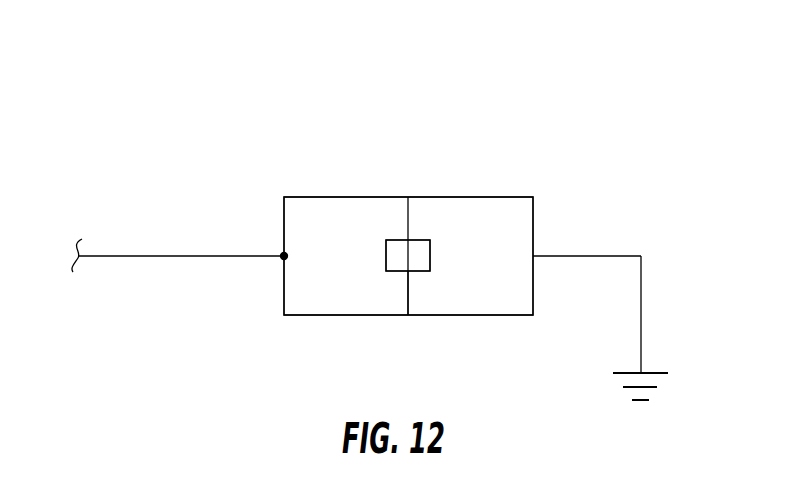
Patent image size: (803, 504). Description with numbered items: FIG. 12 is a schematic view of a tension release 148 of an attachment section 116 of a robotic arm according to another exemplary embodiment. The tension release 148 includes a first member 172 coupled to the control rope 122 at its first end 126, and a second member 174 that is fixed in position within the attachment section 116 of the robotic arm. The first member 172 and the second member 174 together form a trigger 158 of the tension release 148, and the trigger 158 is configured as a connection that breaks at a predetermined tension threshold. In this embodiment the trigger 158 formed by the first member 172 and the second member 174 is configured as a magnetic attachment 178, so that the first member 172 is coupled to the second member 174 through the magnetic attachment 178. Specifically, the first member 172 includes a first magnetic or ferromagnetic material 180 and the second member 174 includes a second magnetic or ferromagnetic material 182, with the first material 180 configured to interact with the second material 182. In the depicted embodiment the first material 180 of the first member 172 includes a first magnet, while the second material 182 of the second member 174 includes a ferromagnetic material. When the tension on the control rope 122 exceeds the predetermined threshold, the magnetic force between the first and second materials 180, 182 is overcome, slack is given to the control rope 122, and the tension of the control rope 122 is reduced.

The attachment section 116 is at (602, 80).
The tension release 148 is at (432, 113).
The control rope 122 is at (185, 254).
The first end 126 is at (280, 264).
The first member 172 is at (336, 210).
The second member 174 is at (483, 222).
The trigger 158 is at (391, 206).
The magnetic attachment 178 is at (418, 290).
The second magnetic or ferromagnetic material 182 is at (422, 254).
The first magnetic or ferromagnetic material 180 is at (393, 255).